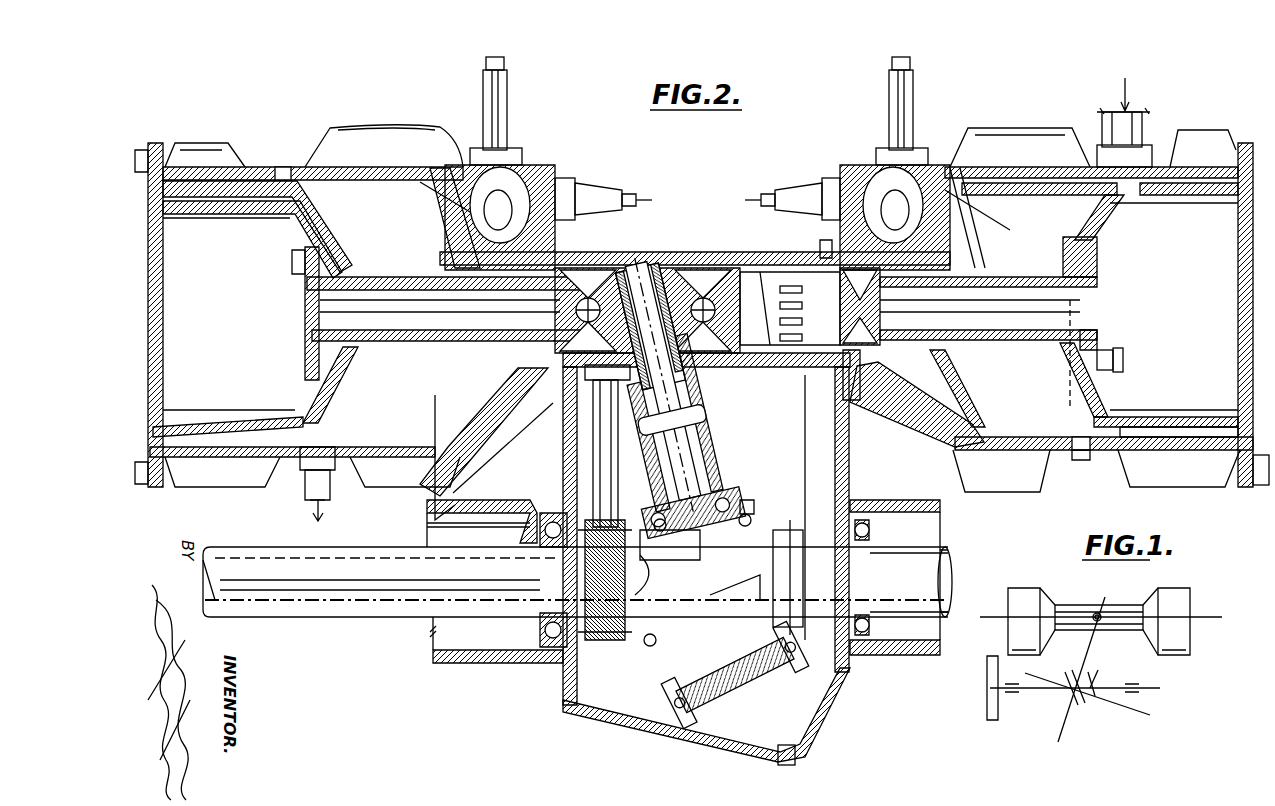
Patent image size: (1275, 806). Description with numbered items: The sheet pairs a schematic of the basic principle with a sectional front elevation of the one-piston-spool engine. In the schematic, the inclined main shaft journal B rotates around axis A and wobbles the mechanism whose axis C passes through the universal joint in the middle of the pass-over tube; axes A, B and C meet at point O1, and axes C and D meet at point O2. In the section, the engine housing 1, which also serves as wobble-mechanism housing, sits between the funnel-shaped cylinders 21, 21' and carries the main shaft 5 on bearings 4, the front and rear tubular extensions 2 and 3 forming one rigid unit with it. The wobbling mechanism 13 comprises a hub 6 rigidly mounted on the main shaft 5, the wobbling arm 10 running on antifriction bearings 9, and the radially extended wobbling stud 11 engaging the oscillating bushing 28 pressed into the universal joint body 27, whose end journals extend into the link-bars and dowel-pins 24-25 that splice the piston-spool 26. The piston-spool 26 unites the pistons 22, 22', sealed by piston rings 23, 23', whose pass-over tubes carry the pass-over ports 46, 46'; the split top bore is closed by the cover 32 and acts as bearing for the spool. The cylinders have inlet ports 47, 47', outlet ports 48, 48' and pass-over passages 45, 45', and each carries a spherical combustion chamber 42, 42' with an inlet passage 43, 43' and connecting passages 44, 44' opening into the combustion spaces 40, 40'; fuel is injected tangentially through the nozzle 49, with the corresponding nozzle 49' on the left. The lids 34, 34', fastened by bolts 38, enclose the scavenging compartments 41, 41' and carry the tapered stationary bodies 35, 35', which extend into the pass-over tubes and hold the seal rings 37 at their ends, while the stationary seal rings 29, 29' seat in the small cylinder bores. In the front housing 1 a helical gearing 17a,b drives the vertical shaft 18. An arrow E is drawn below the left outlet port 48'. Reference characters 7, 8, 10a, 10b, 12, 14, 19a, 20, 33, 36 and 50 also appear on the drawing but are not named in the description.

In FIG. 2, the engine housing 1 is at (563, 705).
In FIG. 2, the front tubular extension 2 is at (935, 656).
In FIG. 2, the rear tubular extension 3 is at (447, 663).
In FIG. 2, the bearings 4 is at (875, 658).
In FIG. 2, the main shaft 5 is at (1126, 65).
In FIG. 2, the hub 6 is at (660, 660).
In FIG. 2, the shaft bore 7 is at (770, 588).
In FIG. 2, the bearing 8 is at (752, 518).
In FIG. 2, the antifriction bearings 9 is at (754, 495).
In FIG. 2, the wobbling arm 10 is at (695, 445).
In FIG. 2, the lower bearing 10a is at (722, 688).
In FIG. 2, the lower bearing 10b is at (775, 688).
In FIG. 2, the wobbling stud 11 is at (715, 455).
In FIG. 2, the bearing support 12 is at (700, 680).
In FIG. 2, the wobbling mechanism 13 is at (720, 478).
In FIG. 2, the ball bearing 14 is at (540, 680).
In FIG. 2, the helical gearing 17a,b is at (555, 580).
In FIG. 2, the vertical shaft 18 is at (594, 455).
In FIG. 2, the collar 19a is at (800, 640).
In FIG. 2, the axis line 20 is at (803, 460).
In FIG. 2, the cylinder 21 is at (1096, 471).
In FIG. 2, the cylinder 21' is at (312, 480).
In FIG. 2, the piston 22 is at (1020, 147).
In FIG. 2, the piston 22' is at (205, 141).
In FIG. 2, the piston rings 23 is at (1083, 278).
In FIG. 2, the piston rings 23' is at (384, 148).
In FIG. 2, the splicing link-bars and link dowel-pins 24-25 is at (615, 265).
In FIG. 2, the piston-spool 26 is at (722, 262).
In FIG. 2, the universal joint body 27 is at (690, 262).
In FIG. 2, the oscillating bushing 28 is at (665, 262).
In FIG. 2, the stationary seal ring 29 is at (830, 306).
In FIG. 2, the stationary seal ring 29' is at (576, 404).
In FIG. 2, the cover 32 is at (738, 255).
In FIG. 2, the ring 33 is at (818, 244).
In FIG. 2, the lid 34 is at (1214, 315).
In FIG. 2, the lid 34' is at (270, 315).
In FIG. 2, the stationary body 35 is at (1107, 322).
In FIG. 2, the stationary body 35' is at (304, 335).
In FIG. 2, the bolt 36 is at (1108, 368).
In FIG. 2, the seal rings 37 is at (582, 275).
In FIG. 2, the bolts 38 is at (1255, 485).
In FIG. 2, the combustion space 40 is at (1096, 305).
In FIG. 2, the combustion space 40' is at (277, 305).
In FIG. 2, the scavenging compartment 41 is at (1099, 308).
In FIG. 2, the scavenging compartment 41' is at (306, 312).
In FIG. 2, the combustion chamber 42 is at (895, 217).
In FIG. 2, the combustion chamber 42' is at (504, 206).
In FIG. 2, the inlet passage 43 is at (962, 221).
In FIG. 2, the inlet passage 43' is at (460, 225).
In FIG. 2, the connecting passages 44 is at (977, 210).
In FIG. 2, the connecting passages 44' is at (452, 218).
In FIG. 2, the pass-over passage 45 is at (913, 398).
In FIG. 2, the pass-over passage 45' is at (484, 430).
In FIG. 2, the pass-over ports 46 is at (790, 308).
In FIG. 2, the pass-over ports 46' is at (494, 457).
In FIG. 2, the inlet port 47 is at (1111, 236).
In FIG. 2, the inlet port 47' is at (303, 147).
In FIG. 2, the outlet port 48 is at (1071, 462).
In FIG. 2, the outlet port 48' is at (296, 475).
In FIG. 2, the nozzle 49 is at (884, 111).
In FIG. 2, the nozzle 49' is at (517, 111).
In FIG. 2, the pin 50 is at (794, 178).
In FIG. 2, the direction arrow E is at (317, 518).
In FIG. 1, the axis A is at (1080, 688).
In FIG. 1, the inclined main shaft journal B is at (1097, 702).
In FIG. 1, the axis C is at (1087, 656).
In FIG. 1, the axis D is at (1110, 621).
In FIG. 1, the point o1 O1 is at (1103, 676).
In FIG. 1, the point o2 O2 is at (1100, 622).